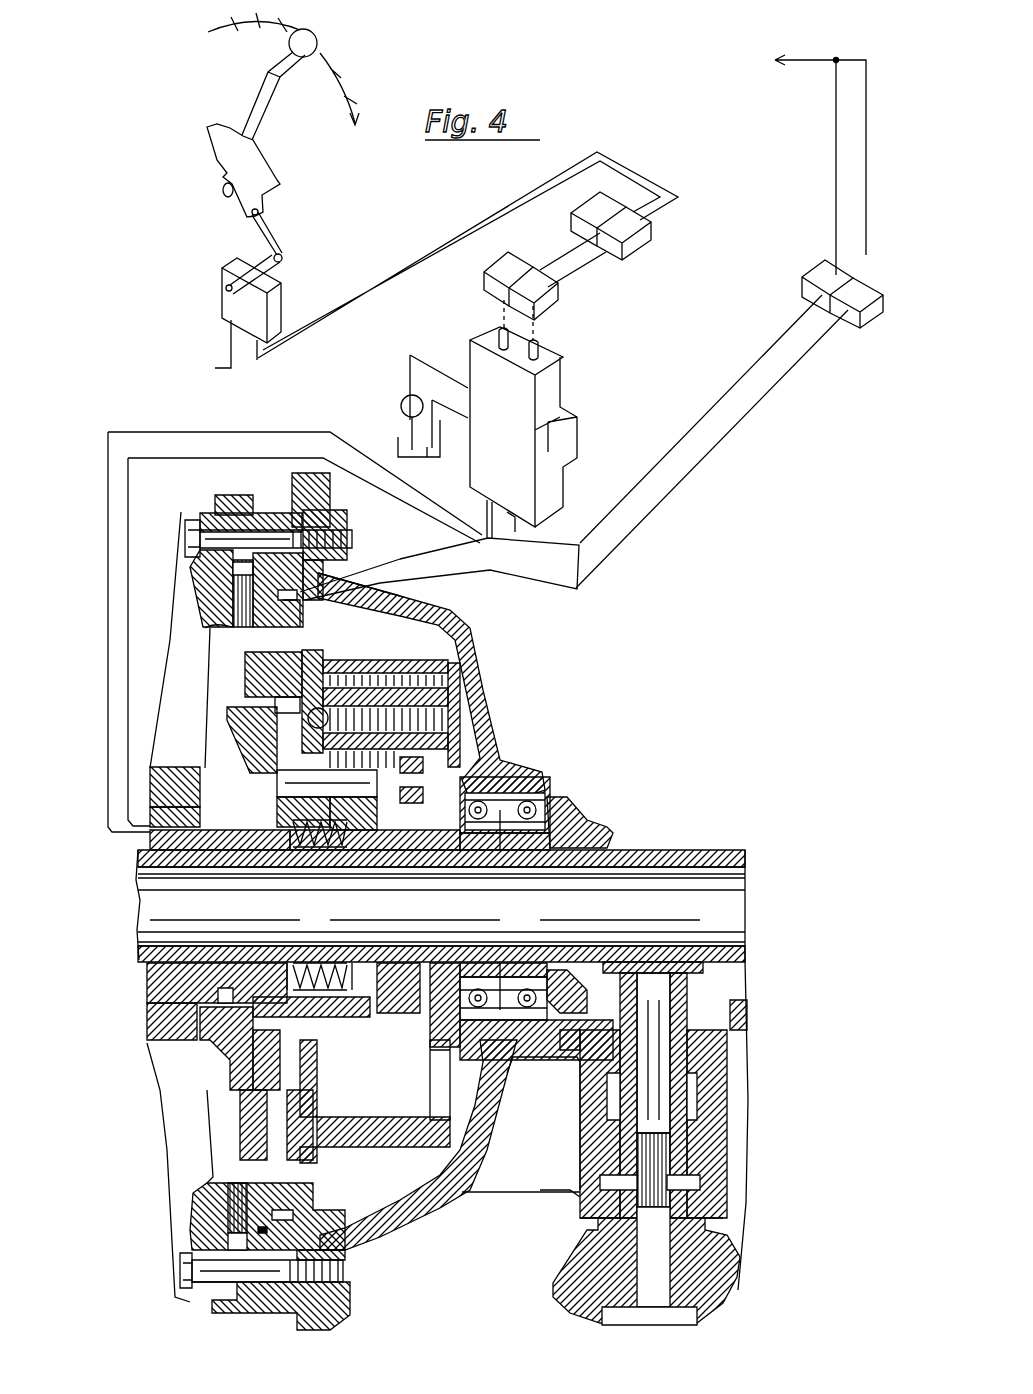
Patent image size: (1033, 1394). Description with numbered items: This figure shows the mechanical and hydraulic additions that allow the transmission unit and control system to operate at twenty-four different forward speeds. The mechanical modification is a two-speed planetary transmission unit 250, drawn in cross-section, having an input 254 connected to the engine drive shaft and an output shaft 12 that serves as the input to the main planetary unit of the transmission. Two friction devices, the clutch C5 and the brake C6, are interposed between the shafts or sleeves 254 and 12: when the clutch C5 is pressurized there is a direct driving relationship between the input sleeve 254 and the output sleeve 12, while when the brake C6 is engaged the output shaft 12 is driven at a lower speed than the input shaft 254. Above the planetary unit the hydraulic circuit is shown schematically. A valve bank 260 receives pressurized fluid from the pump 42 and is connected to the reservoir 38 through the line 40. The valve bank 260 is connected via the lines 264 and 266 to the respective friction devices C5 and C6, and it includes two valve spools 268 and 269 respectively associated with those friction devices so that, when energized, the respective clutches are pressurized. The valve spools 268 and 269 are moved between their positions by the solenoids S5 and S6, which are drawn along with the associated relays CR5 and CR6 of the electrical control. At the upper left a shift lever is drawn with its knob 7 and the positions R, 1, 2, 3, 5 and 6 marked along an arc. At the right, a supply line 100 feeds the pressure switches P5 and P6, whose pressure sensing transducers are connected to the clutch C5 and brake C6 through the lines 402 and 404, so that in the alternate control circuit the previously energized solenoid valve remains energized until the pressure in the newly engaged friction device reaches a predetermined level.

The reverse position R is at (238, 34).
The first gear position 1 is at (233, 15).
The second gear position 2 is at (259, 14).
The third gear position 3 is at (285, 16).
The fifth gear position 5 is at (339, 82).
The sixth gear position 6 is at (358, 103).
The shift lever knob 7 is at (312, 35).
The output shaft 12 is at (140, 862).
The reservoir 38 is at (397, 443).
The line 40 is at (453, 420).
The pump 42 is at (403, 400).
The pressure supply line 100 is at (795, 72).
The two-speed planetary transmission unit 250 is at (536, 696).
The input 254 is at (673, 852).
The valve bank 260 is at (560, 392).
The line 264 is at (140, 437).
The line 266 is at (440, 545).
The valve spool 268 is at (540, 350).
The valve spool 269 is at (500, 332).
The line 402 is at (748, 408).
The line 404 is at (742, 376).
The clutch C5 is at (240, 740).
The brake C6 is at (300, 621).
The relay CR5 is at (633, 247).
The relay CR6 is at (582, 217).
The solenoid S5 is at (548, 295).
The solenoid S6 is at (485, 270).
The pressure switch P5 is at (867, 317).
The pressure switch P6 is at (816, 268).